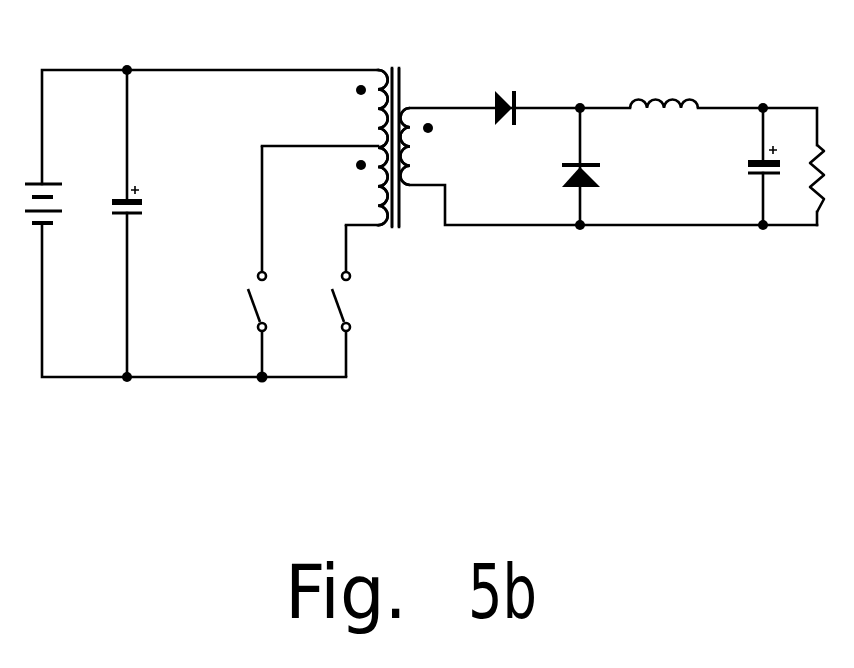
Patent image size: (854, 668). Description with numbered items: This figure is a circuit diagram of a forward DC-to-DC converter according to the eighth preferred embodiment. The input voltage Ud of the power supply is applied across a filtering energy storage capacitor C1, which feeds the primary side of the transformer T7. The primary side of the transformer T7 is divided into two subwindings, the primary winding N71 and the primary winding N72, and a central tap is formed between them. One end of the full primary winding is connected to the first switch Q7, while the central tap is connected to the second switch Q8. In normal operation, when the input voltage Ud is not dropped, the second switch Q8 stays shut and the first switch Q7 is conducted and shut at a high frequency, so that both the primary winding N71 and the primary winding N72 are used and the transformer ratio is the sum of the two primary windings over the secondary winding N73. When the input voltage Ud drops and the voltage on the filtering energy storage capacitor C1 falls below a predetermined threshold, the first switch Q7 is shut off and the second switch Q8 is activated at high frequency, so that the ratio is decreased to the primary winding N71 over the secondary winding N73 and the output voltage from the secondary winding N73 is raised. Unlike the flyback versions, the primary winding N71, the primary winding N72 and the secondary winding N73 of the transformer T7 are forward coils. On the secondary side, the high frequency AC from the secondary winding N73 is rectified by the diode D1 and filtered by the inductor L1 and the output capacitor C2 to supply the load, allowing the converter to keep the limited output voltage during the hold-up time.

The input voltage Ud is at (55, 190).
The filtering energy storage capacitor C1 is at (140, 196).
The second switch Q8 is at (225, 261).
The first switch Q7 is at (372, 301).
The transformer T7 is at (395, 127).
The primary winding N71 is at (357, 109).
The primary winding N72 is at (357, 187).
The secondary winding N73 is at (432, 146).
The diode D1 is at (508, 126).
The inductor L1 is at (664, 92).
The output capacitor C2 is at (746, 162).